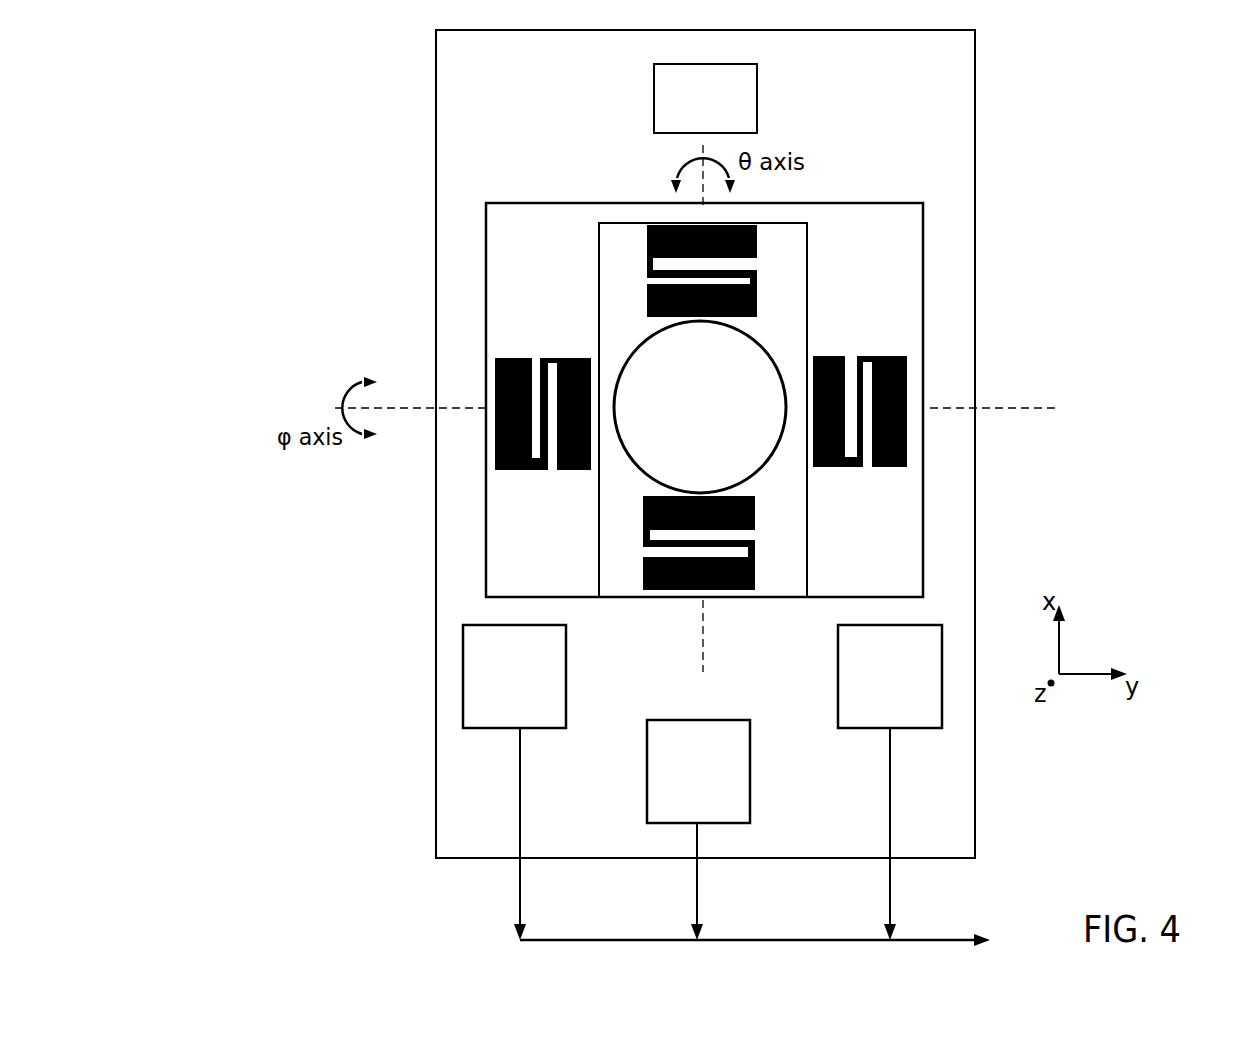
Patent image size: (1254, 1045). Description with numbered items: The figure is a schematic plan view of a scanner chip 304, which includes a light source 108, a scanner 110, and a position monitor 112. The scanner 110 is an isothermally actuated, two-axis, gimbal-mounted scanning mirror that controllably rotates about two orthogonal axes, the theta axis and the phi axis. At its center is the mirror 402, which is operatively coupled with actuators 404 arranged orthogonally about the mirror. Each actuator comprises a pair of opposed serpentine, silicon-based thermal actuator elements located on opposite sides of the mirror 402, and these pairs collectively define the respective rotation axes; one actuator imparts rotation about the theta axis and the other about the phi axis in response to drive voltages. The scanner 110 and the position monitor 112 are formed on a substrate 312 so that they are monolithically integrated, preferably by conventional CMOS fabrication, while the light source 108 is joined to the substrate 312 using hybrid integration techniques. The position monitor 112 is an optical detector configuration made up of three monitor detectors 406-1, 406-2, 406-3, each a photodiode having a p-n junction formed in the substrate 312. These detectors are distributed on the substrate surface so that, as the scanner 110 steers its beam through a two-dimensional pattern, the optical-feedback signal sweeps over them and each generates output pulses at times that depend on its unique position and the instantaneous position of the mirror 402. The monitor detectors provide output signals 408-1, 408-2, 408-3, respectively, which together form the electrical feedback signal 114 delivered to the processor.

The scanner chip 304 is at (318, 88).
The light source 108 is at (858, 82).
The scanner 110 is at (870, 268).
The mirror 402 is at (762, 422).
The actuators 404 is at (726, 407).
The substrate 312 is at (436, 705).
The position monitor 112 is at (557, 736).
The monitor detector 406-1 is at (554, 684).
The monitor detector 406-2 is at (924, 684).
The monitor detector 406-3 is at (698, 771).
The output signal 408-1 is at (520, 893).
The output signal 408-2 is at (697, 896).
The output signal 408-3 is at (890, 896).
The feedback signal 114 is at (933, 940).